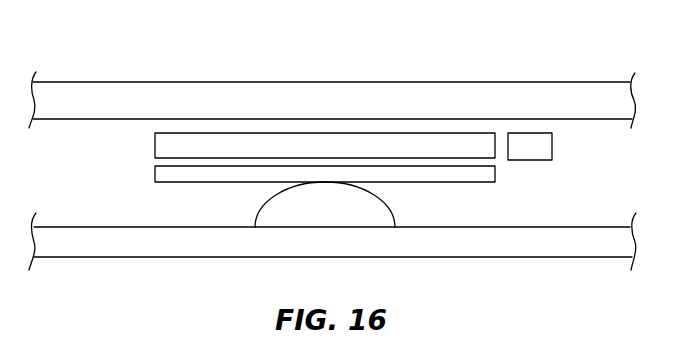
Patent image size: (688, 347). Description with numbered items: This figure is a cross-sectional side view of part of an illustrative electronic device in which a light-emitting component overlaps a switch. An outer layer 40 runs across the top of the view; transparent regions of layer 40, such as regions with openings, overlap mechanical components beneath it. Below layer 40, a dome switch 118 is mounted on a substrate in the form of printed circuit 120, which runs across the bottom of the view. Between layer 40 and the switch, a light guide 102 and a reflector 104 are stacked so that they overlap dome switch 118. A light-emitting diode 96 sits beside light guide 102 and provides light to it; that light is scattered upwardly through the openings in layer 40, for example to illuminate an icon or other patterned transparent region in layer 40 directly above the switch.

The layer 40 is at (583, 96).
The light-emitting diode 96 is at (552, 145).
The light guide 102 is at (155, 143).
The reflector 104 is at (155, 170).
The dome switch 118 is at (382, 203).
The printed circuit 120 is at (118, 243).